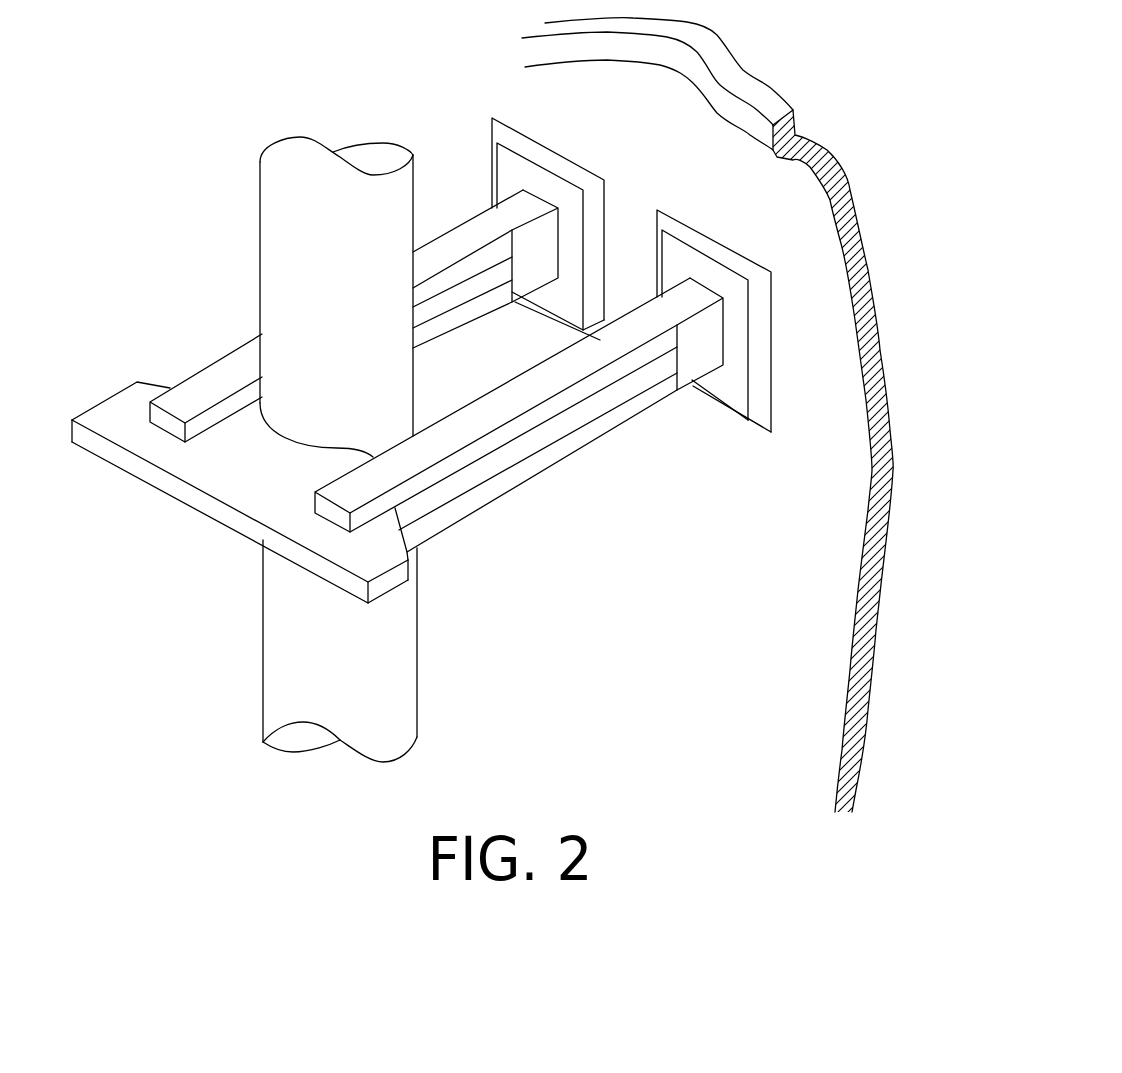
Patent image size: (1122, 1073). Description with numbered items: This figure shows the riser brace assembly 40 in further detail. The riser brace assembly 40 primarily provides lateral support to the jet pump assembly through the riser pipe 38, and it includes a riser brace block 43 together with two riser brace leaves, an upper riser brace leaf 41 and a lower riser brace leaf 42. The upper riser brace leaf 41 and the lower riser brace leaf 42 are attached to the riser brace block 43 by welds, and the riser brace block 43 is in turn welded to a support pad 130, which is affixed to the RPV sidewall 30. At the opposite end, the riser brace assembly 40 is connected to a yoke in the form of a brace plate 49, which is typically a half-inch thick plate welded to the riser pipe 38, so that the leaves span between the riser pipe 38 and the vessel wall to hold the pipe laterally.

The RPV sidewall 30 is at (704, 160).
The riser pipe 38 is at (265, 703).
The riser brace assembly 40 is at (712, 550).
The upper riser brace leaf 41 is at (460, 218).
The lower riser brace leaf 42 is at (553, 463).
The riser brace block 43 is at (652, 284).
The brace plate 49 is at (170, 493).
The support pad 130 is at (776, 435).